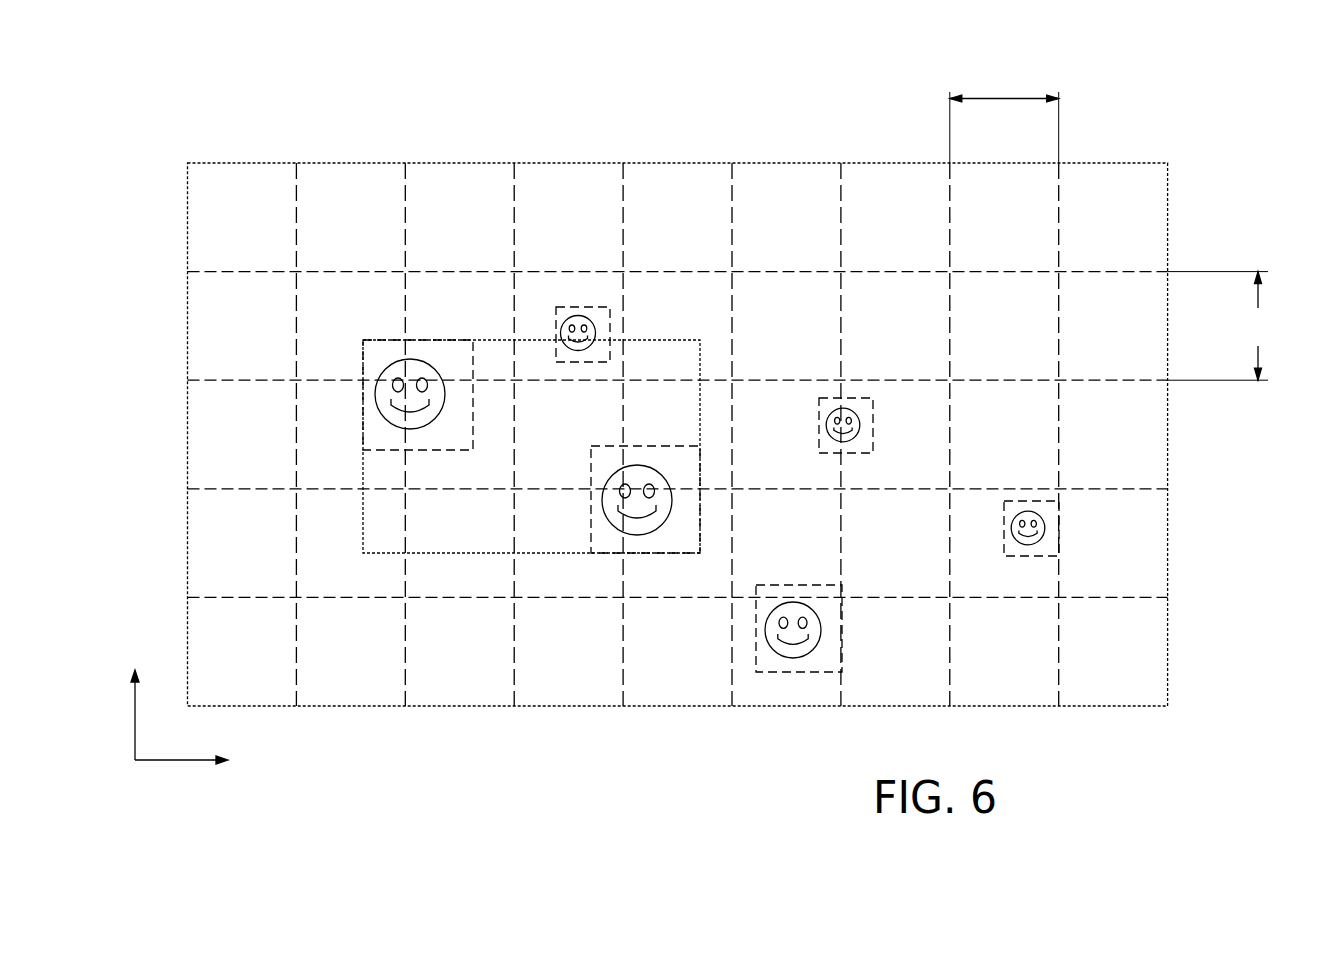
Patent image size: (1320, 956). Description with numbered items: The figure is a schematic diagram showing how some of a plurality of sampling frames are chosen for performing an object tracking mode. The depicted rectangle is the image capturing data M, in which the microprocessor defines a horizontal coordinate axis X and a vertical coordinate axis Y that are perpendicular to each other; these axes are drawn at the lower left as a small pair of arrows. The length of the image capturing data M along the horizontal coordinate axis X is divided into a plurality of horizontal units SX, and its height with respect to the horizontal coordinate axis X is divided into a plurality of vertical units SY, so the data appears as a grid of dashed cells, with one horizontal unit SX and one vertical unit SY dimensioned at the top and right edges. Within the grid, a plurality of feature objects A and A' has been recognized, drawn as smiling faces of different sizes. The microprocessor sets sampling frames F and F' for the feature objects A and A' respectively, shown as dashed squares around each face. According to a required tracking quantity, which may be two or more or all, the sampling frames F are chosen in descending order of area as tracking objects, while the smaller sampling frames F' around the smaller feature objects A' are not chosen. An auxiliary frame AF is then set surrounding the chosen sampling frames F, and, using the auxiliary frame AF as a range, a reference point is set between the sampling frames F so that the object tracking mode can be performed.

The image capturing data M is at (1140, 163).
The horizontal unit SX is at (1004, 109).
The vertical unit SY is at (1221, 326).
The auxiliary frame AF is at (700, 361).
The sampling frame F is at (531, 414).
The feature object A is at (528, 459).
The sampling frame F' is at (845, 484).
The feature object A' is at (828, 442).
The horizontal coordinate axis X is at (193, 760).
The vertical coordinate axis Y is at (133, 697).